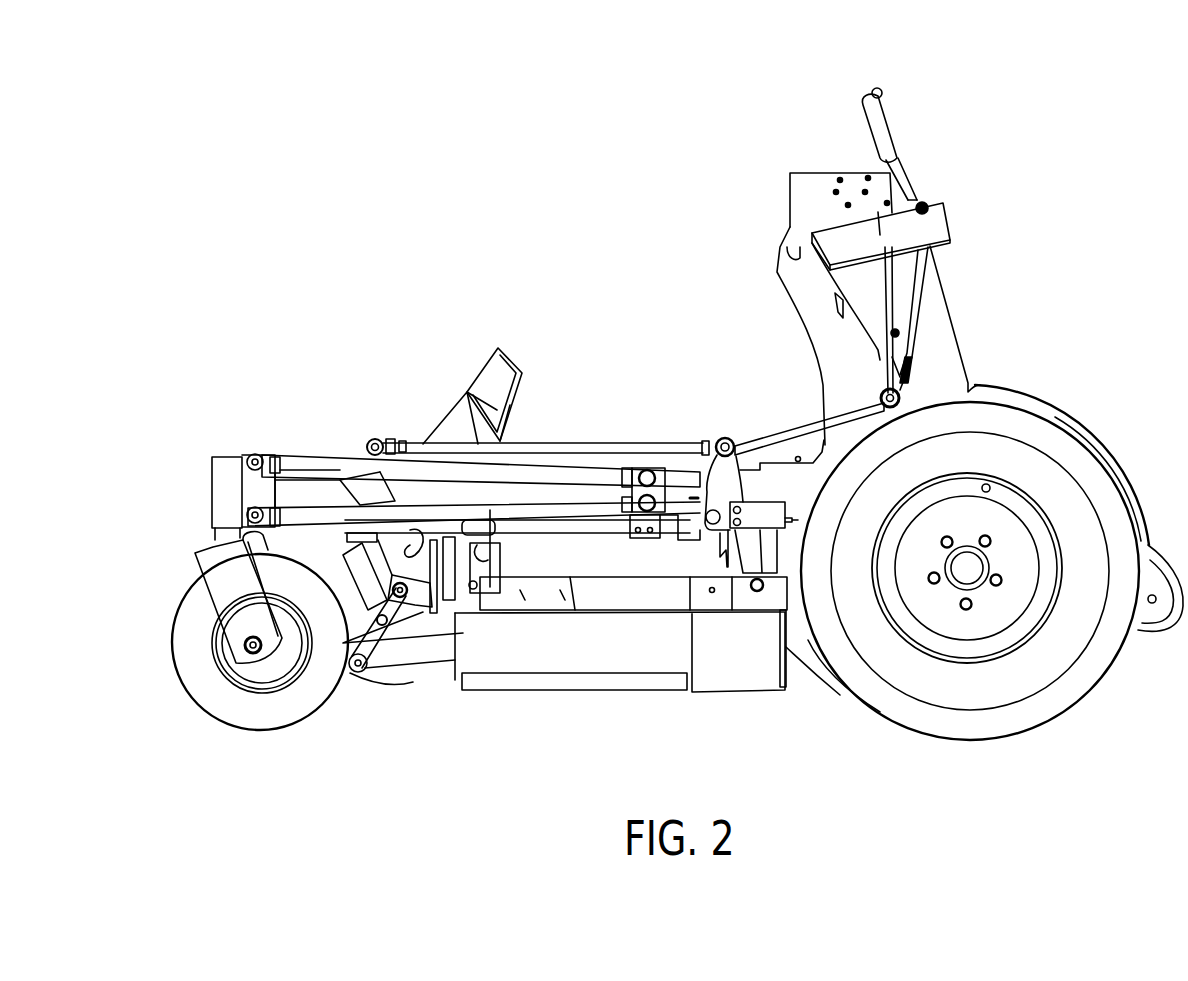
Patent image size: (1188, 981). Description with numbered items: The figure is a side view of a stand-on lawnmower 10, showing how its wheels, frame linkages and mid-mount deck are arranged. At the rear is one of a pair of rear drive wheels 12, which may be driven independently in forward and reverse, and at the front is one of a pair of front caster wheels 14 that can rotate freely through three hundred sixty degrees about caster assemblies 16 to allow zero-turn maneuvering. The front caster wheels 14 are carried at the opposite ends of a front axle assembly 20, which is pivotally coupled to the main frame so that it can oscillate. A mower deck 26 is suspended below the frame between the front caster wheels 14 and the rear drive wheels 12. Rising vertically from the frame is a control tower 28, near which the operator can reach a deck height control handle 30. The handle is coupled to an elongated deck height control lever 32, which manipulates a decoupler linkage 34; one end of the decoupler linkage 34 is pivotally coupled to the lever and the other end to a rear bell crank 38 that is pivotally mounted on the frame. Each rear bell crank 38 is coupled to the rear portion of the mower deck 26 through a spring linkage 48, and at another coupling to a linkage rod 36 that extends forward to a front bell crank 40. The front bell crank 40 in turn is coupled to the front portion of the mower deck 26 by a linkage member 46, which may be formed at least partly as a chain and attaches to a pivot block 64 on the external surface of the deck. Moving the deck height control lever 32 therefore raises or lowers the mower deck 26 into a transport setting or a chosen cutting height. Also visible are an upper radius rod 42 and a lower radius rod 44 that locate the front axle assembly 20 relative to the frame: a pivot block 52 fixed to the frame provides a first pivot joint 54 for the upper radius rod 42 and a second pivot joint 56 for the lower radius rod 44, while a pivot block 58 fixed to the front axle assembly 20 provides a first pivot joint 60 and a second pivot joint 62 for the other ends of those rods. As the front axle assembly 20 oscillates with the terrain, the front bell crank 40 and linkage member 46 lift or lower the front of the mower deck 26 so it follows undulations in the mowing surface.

The stand-on lawnmower 10 is at (428, 210).
The rear drive wheels 12 is at (1064, 700).
The front caster wheels 14 is at (185, 652).
The caster assemblies 16 is at (220, 472).
The front axle assembly 20 is at (320, 499).
The mower deck 26 is at (615, 652).
The control tower 28 is at (841, 180).
The deck height control handle 30 is at (890, 134).
The deck height control lever 32 is at (905, 318).
The decoupler linkage 34 is at (808, 426).
The linkage rod 36 is at (431, 442).
The rear bell crank 38 is at (722, 480).
The front bell crank 40 is at (374, 443).
The upper radius rod 42 is at (344, 462).
The lower radius rod 44 is at (489, 511).
The linkage member 46 is at (358, 672).
The spring linkage 48 is at (770, 530).
The pivot block 52 is at (659, 480).
The first pivot joint 54 is at (642, 470).
The second pivot joint 56 is at (624, 473).
The pivot block 58 is at (266, 478).
The first pivot joint 60 is at (256, 454).
The second pivot joint 62 is at (246, 518).
The pivot block 64 is at (400, 645).